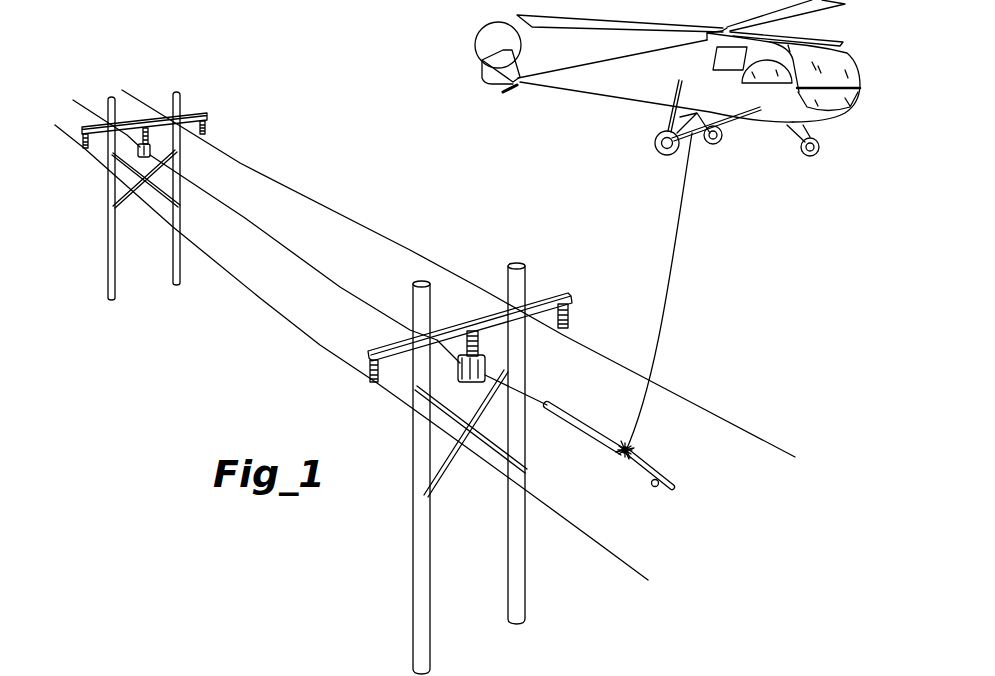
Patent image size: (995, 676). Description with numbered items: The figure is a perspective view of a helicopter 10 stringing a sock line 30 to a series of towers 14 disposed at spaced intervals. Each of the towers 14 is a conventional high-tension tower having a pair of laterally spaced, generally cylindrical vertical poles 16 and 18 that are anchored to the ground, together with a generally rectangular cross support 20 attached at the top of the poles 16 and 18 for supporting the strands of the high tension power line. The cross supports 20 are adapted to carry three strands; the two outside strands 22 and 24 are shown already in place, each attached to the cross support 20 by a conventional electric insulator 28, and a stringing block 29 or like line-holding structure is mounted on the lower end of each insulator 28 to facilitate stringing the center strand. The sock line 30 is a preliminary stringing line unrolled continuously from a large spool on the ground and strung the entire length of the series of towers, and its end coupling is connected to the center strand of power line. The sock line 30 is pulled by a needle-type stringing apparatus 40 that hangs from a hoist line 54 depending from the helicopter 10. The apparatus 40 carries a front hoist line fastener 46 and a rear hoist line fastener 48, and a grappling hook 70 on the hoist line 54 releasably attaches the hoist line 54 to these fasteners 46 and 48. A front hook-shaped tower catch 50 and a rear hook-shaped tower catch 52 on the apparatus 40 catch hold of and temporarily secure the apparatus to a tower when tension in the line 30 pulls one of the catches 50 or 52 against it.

The helicopter 10 is at (775, 157).
The towers 14 is at (342, 361).
The vertical pole 16 is at (173, 271).
The vertical pole 18 is at (110, 271).
The cross support 20 is at (150, 119).
The outside strand of power line 22 is at (327, 350).
The outside strand of power line 24 is at (407, 251).
The electric insulator 28 is at (83, 150).
The stringing block 29 is at (160, 150).
The sock line 30 is at (247, 217).
The needle-type stringing apparatus 40 is at (640, 462).
The front hoist line fastener 46 is at (655, 487).
The rear hoist line fastener 48 is at (620, 452).
The front hook-shaped tower catch 50 is at (675, 489).
The rear hook-shaped tower catch 52 is at (624, 443).
The hoist line 54 is at (675, 301).
The grappling hook 70 is at (627, 451).